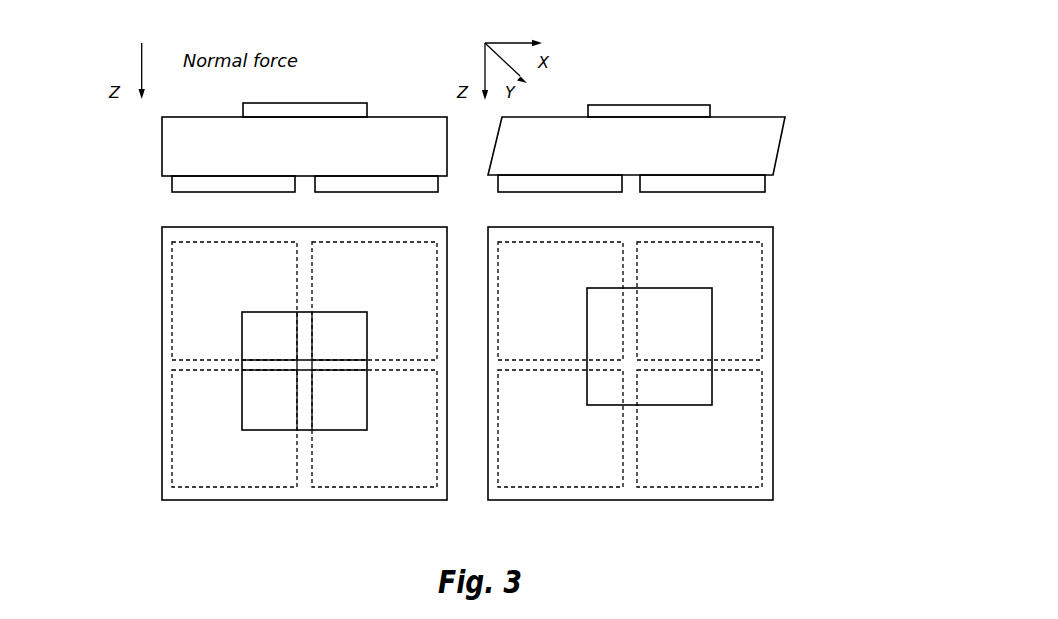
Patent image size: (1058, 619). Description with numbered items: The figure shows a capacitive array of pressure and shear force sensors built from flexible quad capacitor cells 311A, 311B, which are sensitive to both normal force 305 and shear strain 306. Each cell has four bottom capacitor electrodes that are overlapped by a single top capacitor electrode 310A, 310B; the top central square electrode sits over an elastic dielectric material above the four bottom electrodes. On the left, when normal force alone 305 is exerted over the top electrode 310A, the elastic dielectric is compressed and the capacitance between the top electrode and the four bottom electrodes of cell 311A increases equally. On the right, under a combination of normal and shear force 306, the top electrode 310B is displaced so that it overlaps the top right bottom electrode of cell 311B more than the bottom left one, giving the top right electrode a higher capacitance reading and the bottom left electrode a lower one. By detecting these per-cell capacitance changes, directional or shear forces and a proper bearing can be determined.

The normal force 305 is at (642, 43).
The shear strain 306 is at (657, 79).
The top electrode 310A is at (267, 103).
The flexible quad capacitor cell 311A is at (355, 192).
The top electrode 310B is at (697, 118).
The flexible quad capacitor cell 311B is at (593, 192).